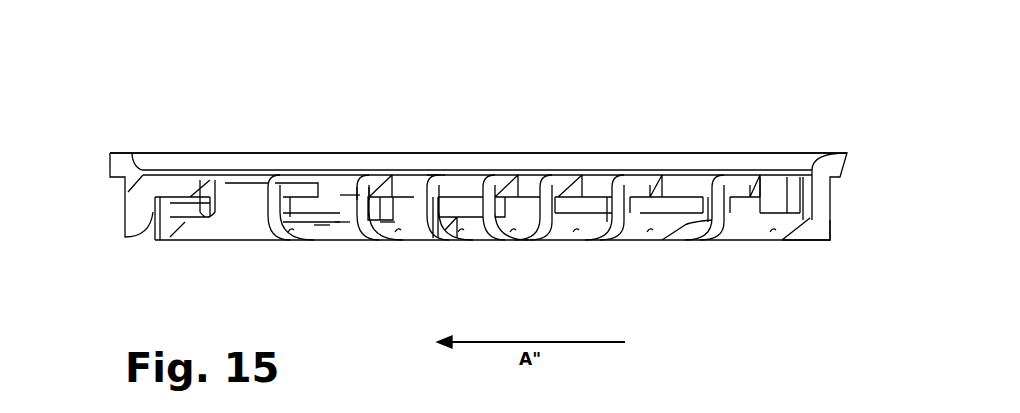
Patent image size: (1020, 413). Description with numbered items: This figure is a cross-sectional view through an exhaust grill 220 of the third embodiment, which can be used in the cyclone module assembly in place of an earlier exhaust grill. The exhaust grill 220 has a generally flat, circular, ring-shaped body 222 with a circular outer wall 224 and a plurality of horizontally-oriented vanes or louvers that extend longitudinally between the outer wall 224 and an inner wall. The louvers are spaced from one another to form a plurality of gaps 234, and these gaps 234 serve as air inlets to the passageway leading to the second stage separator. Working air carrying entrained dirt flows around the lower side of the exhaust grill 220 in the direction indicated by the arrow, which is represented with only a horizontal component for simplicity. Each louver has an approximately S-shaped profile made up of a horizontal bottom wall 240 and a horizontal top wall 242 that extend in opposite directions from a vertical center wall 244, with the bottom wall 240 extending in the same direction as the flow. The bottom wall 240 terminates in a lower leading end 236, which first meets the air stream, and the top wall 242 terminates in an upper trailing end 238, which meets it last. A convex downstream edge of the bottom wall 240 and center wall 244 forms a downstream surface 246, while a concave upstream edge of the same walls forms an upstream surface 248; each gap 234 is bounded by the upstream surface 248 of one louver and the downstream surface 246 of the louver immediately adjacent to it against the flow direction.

The exhaust grill 220 is at (146, 86).
The body 222 is at (852, 152).
The outer wall 224 is at (832, 222).
The gaps 234 is at (290, 243).
The lower leading end 236 is at (318, 228).
The upper trailing end 238 is at (430, 178).
The bottom wall 240 is at (338, 225).
The top wall 242 is at (378, 190).
The center wall 244 is at (358, 188).
The downstream surface 246 is at (385, 222).
The upstream surface 248 is at (346, 198).